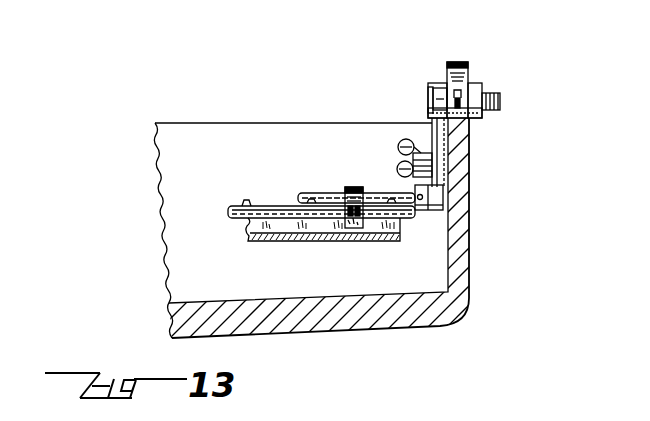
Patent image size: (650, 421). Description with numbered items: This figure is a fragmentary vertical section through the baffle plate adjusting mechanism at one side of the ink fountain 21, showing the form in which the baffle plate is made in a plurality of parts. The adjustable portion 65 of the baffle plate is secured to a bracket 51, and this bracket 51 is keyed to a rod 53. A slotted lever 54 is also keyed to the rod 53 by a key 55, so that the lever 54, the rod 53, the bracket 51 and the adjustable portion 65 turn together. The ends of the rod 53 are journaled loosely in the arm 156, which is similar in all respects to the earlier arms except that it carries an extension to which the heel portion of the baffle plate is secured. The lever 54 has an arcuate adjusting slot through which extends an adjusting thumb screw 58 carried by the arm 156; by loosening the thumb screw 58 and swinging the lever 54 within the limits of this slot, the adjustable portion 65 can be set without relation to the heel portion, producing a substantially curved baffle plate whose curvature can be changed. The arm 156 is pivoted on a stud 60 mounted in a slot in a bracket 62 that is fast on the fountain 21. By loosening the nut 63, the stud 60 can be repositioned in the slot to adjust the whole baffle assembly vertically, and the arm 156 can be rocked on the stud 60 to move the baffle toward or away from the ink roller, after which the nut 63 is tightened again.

The fountain 21 is at (470, 298).
The bracket 51 is at (356, 187).
The rod 53 is at (320, 193).
The slotted lever 54 is at (433, 184).
The key 55 is at (423, 198).
The adjusting thumb screw 58 is at (404, 139).
The stud 60 is at (428, 98).
The bracket 62 is at (457, 62).
The nut 63 is at (480, 88).
The adjustable portion of the baffle plate 65 is at (282, 242).
The arm 156 is at (436, 141).